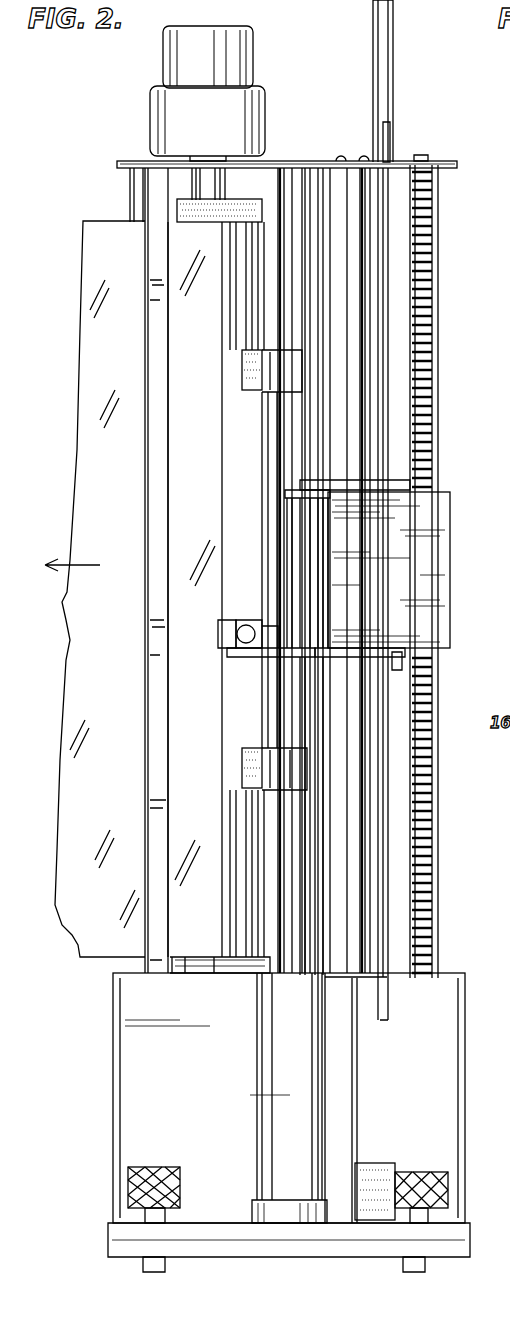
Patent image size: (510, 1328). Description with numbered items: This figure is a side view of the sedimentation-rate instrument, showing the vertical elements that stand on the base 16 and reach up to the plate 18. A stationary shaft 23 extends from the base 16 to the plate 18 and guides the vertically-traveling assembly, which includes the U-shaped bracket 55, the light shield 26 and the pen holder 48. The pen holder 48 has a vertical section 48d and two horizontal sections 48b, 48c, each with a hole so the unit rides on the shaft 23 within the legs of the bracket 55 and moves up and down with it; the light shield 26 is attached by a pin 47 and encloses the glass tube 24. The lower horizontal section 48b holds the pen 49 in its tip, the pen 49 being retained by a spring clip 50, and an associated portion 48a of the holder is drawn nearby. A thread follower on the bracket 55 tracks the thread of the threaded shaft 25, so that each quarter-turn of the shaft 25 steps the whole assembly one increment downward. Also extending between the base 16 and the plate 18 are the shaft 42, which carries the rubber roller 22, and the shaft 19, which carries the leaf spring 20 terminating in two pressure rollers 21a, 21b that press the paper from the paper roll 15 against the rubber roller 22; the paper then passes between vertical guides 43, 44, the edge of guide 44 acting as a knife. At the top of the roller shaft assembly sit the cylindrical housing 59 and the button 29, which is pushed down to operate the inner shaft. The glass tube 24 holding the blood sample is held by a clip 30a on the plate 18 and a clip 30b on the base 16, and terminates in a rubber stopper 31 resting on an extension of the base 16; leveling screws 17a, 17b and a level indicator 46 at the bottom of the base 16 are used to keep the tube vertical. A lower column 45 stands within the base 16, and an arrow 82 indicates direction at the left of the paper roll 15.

The paper roll 15 is at (90, 236).
The base 16 is at (130, 1050).
The leveling screw 17a is at (128, 1177).
The leveling screw 17b is at (448, 1192).
The plate 18 is at (455, 163).
The shaft 19 is at (292, 185).
The leaf spring 20 is at (300, 430).
The pressure roller 21a is at (242, 372).
The pressure roller 21b is at (242, 767).
The rubber roller 22 is at (207, 222).
The stationary shaft 23 is at (325, 185).
The glass tube 24 is at (388, 72).
The threaded shaft 25 is at (438, 236).
The light shield 26 is at (450, 520).
The button 29 is at (253, 48).
The clip 30a is at (390, 135).
The clip 30b is at (385, 1014).
The rubber stopper 31 is at (385, 1165).
The shaft 42 is at (218, 186).
The vertical guide 43 is at (150, 212).
The vertical guide 44 is at (130, 183).
The lower column 45 is at (268, 1116).
The level indicator 46 is at (270, 1205).
The pin 47 is at (350, 648).
The pen holder 48 is at (245, 654).
The ball housing 48a is at (222, 620).
The lower horizontal section 48b is at (327, 816).
The horizontal section 48c is at (320, 488).
The vertical section 48d is at (292, 546).
The pen 49 is at (215, 632).
The spring clip 50 is at (255, 626).
The bracket 55 is at (402, 662).
The cylindrical housing 59 is at (150, 98).
The direction arrow 82 is at (76, 565).